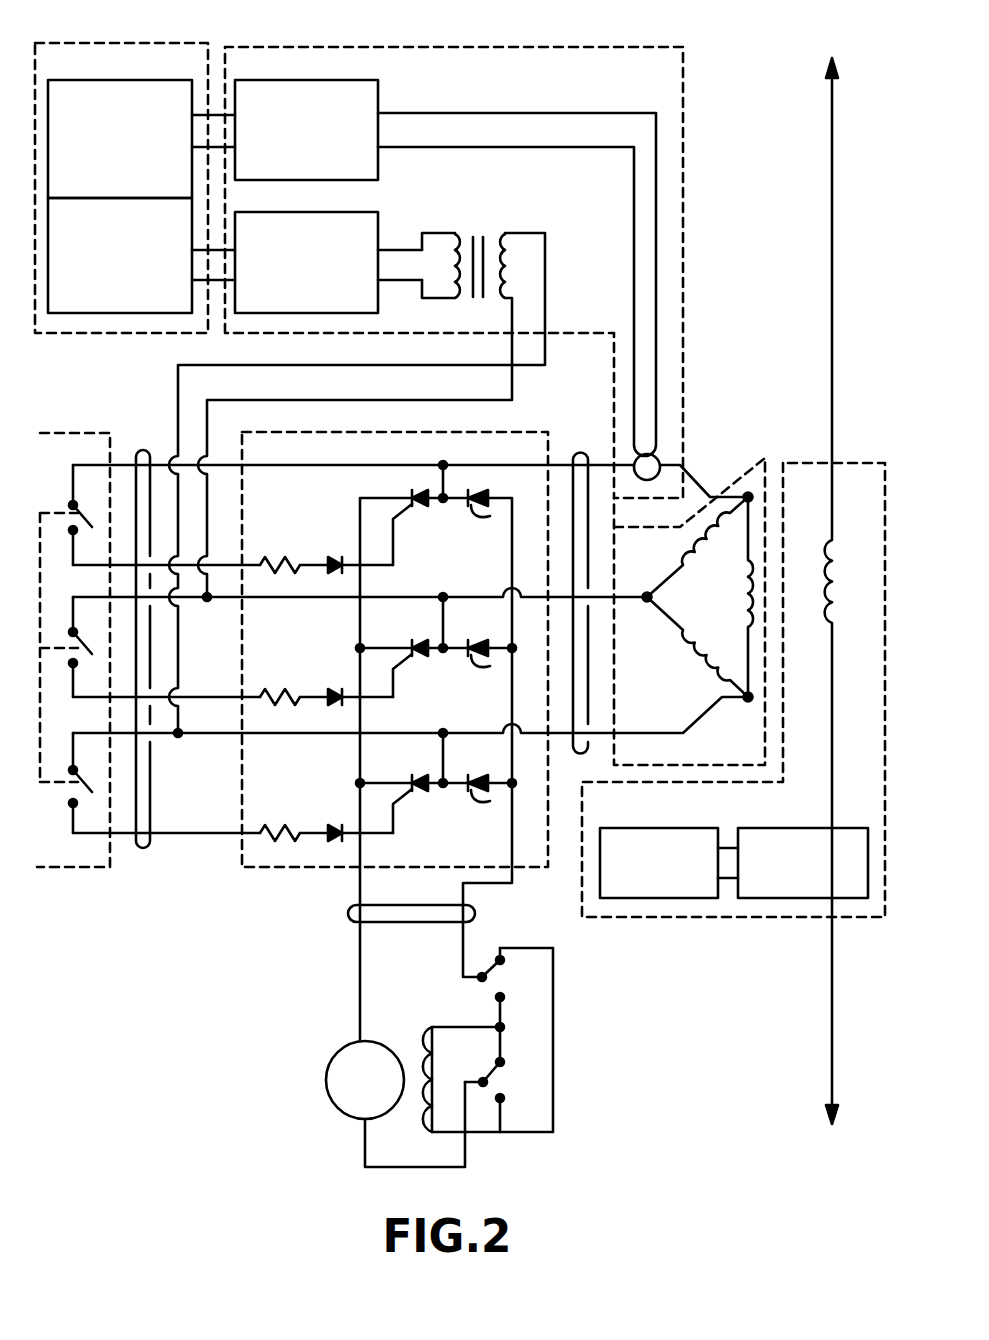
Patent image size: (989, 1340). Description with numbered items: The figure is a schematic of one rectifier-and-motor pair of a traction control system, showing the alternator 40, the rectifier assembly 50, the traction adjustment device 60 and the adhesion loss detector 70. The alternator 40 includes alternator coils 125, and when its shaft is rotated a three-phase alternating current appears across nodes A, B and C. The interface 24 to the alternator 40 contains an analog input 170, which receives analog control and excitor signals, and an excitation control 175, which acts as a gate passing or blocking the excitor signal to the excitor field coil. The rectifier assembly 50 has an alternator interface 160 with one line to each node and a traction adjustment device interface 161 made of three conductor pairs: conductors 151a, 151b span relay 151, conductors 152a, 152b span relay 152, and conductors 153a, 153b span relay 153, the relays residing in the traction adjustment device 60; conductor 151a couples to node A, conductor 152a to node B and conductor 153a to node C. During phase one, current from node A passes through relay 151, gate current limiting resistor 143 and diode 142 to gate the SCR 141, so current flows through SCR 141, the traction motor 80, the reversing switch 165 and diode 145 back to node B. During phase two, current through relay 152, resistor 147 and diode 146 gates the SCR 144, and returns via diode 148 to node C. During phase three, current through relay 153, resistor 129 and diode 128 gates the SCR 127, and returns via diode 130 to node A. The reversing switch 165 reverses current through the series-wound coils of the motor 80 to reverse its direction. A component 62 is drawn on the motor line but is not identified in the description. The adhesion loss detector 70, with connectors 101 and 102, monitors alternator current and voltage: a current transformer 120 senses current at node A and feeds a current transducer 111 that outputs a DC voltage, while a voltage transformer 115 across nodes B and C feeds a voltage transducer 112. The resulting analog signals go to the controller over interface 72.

The interface 72 is at (143, 42).
The adhesion loss detector 70 is at (553, 43).
The connector 101 is at (105, 170).
The connector 102 is at (105, 285).
The current transducer 111 is at (373, 80).
The voltage transducer 112 is at (373, 212).
The voltage transformer 115 is at (488, 230).
The current transformer 120 is at (662, 458).
The traction adjustment device 60 is at (78, 868).
The relay 151 is at (70, 511).
The relay 152 is at (70, 639).
The relay 153 is at (70, 776).
The conductor 151a is at (259, 463).
The conductor 151b is at (237, 566).
The conductor 152a is at (262, 599).
The conductor 152b is at (183, 696).
The conductor 153a is at (262, 735).
The conductor 153b is at (180, 832).
The traction adjustment device interface 161 is at (147, 846).
The rectifier assembly 50 is at (260, 868).
The gate current limiting resistor 143 is at (281, 557).
The diode 142 is at (335, 557).
The gate current limiting resistor 147 is at (281, 689).
The diode 146 is at (335, 689).
The gate current limiting resistor 129 is at (281, 825).
The diode 128 is at (335, 825).
The silicon controlled rectifier 141 is at (428, 502).
The diode 130 is at (480, 502).
The silicon controlled rectifier 144 is at (426, 642).
The diode 145 is at (480, 657).
The silicon controlled rectifier 127 is at (426, 777).
The diode 148 is at (480, 792).
The alternator interface 160 is at (572, 451).
The alternator 40 is at (742, 461).
The alternator coils 125 is at (722, 603).
The interface 24 is at (789, 462).
The analog input 170 is at (710, 826).
The excitation control 175 is at (795, 826).
The current sensor 62 is at (346, 922).
The traction motor 80 is at (388, 1040).
The reversing switch 165 is at (561, 1086).